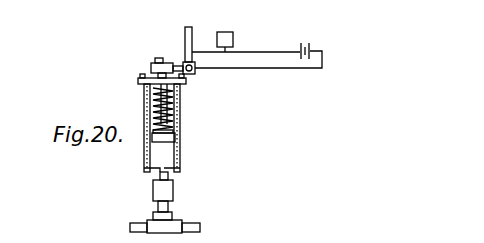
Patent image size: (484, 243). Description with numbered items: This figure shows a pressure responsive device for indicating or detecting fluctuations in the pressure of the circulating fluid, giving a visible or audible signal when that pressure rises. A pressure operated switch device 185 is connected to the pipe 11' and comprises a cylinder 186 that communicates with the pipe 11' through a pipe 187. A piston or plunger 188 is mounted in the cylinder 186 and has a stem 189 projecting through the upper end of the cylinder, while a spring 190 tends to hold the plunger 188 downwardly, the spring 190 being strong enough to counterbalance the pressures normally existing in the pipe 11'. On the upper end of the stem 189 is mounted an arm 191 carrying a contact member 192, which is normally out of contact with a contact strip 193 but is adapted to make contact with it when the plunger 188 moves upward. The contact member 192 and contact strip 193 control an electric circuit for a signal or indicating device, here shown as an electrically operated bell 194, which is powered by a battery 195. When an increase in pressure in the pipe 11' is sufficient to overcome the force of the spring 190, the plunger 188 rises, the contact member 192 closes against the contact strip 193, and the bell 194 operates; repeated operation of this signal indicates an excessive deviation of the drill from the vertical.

The pressure operated switch device 185 is at (181, 107).
The cylinder 186 is at (181, 150).
The pipe 187 is at (152, 182).
The piston or plunger 188 is at (153, 148).
The stem 189 is at (148, 87).
The spring 190 is at (176, 116).
The arm 191 is at (172, 62).
The contact member 192 is at (195, 71).
The contact strip 193 is at (185, 33).
The electrically operated bell 194 is at (233, 41).
The battery 195 is at (308, 35).
The pipe 11' is at (183, 210).